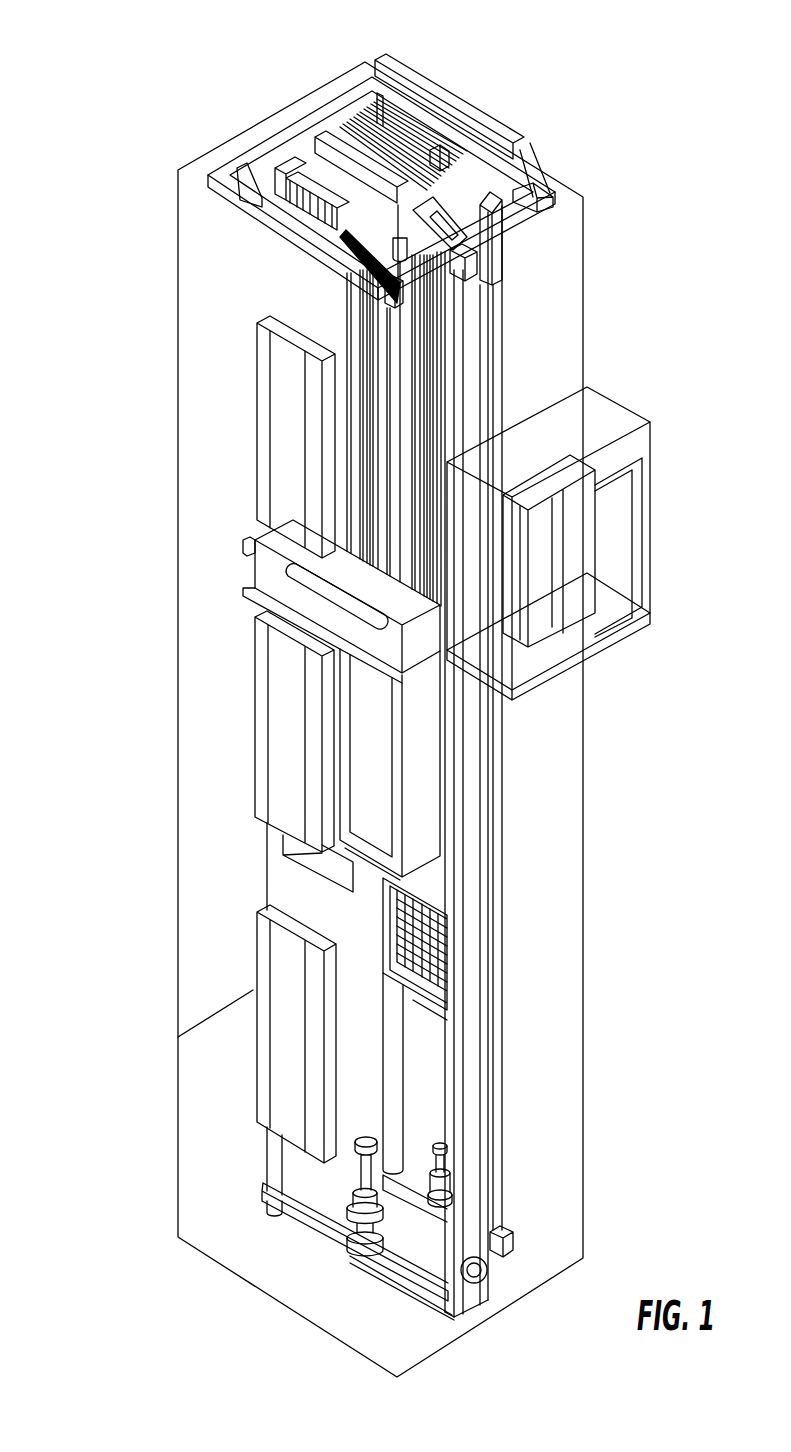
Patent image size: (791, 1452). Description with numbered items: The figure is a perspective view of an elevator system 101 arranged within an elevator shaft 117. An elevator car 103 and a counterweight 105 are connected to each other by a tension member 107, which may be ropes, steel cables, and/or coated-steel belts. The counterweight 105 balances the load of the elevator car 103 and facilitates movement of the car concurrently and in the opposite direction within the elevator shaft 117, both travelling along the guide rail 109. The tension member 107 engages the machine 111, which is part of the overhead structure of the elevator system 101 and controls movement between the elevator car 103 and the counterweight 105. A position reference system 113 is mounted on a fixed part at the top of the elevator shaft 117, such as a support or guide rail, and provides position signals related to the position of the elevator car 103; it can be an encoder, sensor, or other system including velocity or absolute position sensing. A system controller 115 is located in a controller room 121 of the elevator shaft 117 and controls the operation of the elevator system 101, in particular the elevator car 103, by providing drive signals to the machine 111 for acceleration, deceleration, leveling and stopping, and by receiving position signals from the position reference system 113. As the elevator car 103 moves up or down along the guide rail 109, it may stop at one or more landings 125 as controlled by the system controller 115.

The elevator system 101 is at (610, 86).
The elevator car 103 is at (380, 763).
The counterweight 105 is at (433, 963).
The tension member 107 is at (383, 427).
The guide rail 109 is at (470, 883).
The machine 111 is at (288, 166).
The position reference system 113 is at (478, 263).
The system controller 115 is at (588, 558).
The elevator shaft 117 is at (233, 884).
The controller room 121 is at (655, 414).
The landings 125 is at (257, 427).